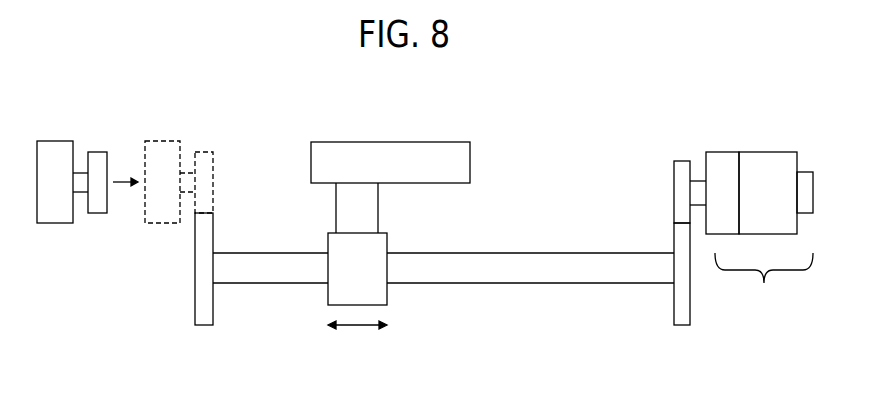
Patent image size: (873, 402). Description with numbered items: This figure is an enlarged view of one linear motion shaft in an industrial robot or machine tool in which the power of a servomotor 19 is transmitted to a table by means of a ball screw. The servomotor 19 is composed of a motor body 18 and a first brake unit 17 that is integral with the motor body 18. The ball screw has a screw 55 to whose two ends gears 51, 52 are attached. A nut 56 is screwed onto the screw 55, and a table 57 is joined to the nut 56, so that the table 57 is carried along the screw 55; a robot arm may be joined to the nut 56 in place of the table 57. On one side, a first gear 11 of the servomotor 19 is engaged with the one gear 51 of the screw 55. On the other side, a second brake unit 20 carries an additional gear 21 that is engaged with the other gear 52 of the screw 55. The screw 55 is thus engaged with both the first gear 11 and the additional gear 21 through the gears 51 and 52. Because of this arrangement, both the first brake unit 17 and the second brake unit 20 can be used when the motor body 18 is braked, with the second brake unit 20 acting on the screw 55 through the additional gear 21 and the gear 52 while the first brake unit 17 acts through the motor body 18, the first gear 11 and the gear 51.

The first gear 11 is at (682, 177).
The first brake unit 17 is at (722, 160).
The motor body 18 is at (763, 162).
The servomotor 19 is at (764, 283).
The second brake unit 20 is at (57, 213).
The additional gear 21 is at (97, 207).
The gear 51 is at (682, 326).
The gear 52 is at (205, 318).
The screw 55 is at (528, 285).
The nut 56 is at (388, 245).
The table 57 is at (452, 142).